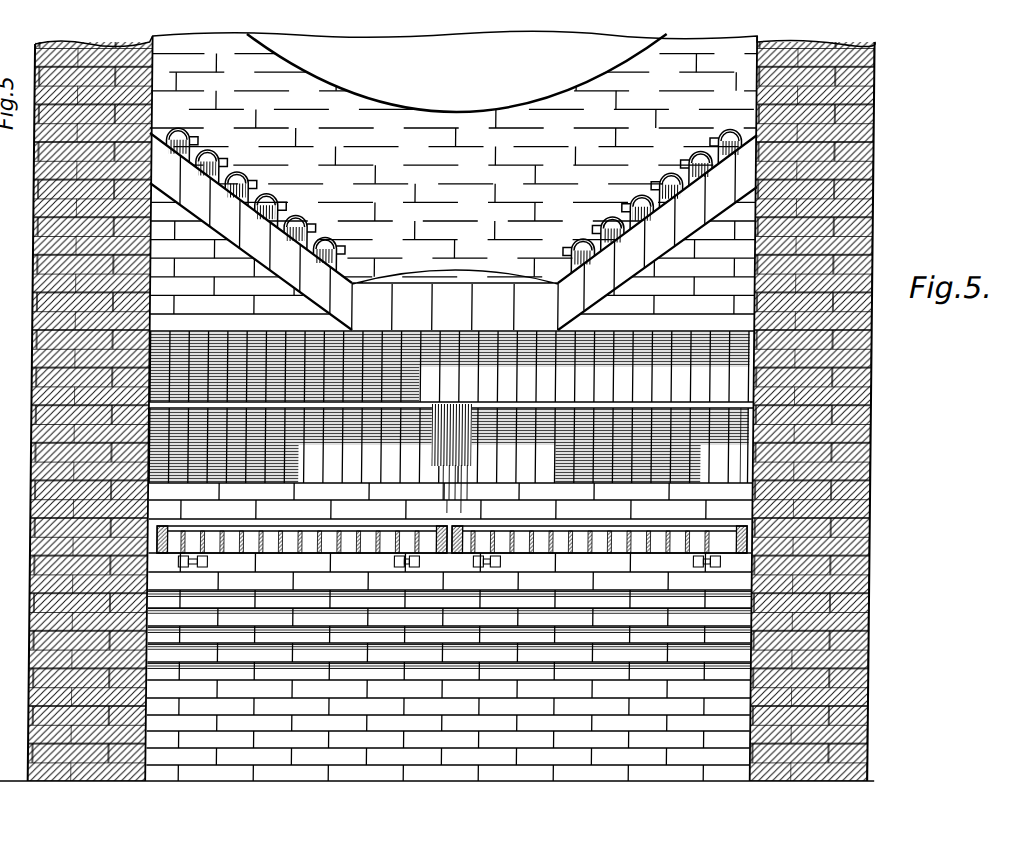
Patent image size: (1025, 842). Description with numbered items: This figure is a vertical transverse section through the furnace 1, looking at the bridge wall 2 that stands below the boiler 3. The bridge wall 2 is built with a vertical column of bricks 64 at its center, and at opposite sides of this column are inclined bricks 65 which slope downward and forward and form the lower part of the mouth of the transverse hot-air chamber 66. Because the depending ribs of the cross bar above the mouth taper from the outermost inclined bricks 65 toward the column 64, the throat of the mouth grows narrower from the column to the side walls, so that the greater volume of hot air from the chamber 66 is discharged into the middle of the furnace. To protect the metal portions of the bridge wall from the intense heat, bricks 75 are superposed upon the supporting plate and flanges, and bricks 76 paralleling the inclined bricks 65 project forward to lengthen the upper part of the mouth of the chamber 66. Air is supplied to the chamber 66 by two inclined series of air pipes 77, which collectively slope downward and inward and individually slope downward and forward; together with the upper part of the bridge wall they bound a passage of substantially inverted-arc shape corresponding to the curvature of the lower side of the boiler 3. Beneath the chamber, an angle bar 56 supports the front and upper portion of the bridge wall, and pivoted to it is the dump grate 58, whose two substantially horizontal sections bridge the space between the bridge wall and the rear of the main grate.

The furnace 1 is at (35, 358).
The bridge wall 2 is at (449, 632).
The boiler 3 is at (456, 73).
The angle bar 56 is at (461, 564).
The dump grate 58 is at (303, 539).
The vertical column of bricks 64 is at (437, 451).
The inclined bricks 65 is at (450, 445).
The transverse hot-air chamber 66 is at (762, 419).
The bricks 75 is at (446, 299).
The bricks 76 is at (474, 408).
The air pipes 77 is at (246, 171).